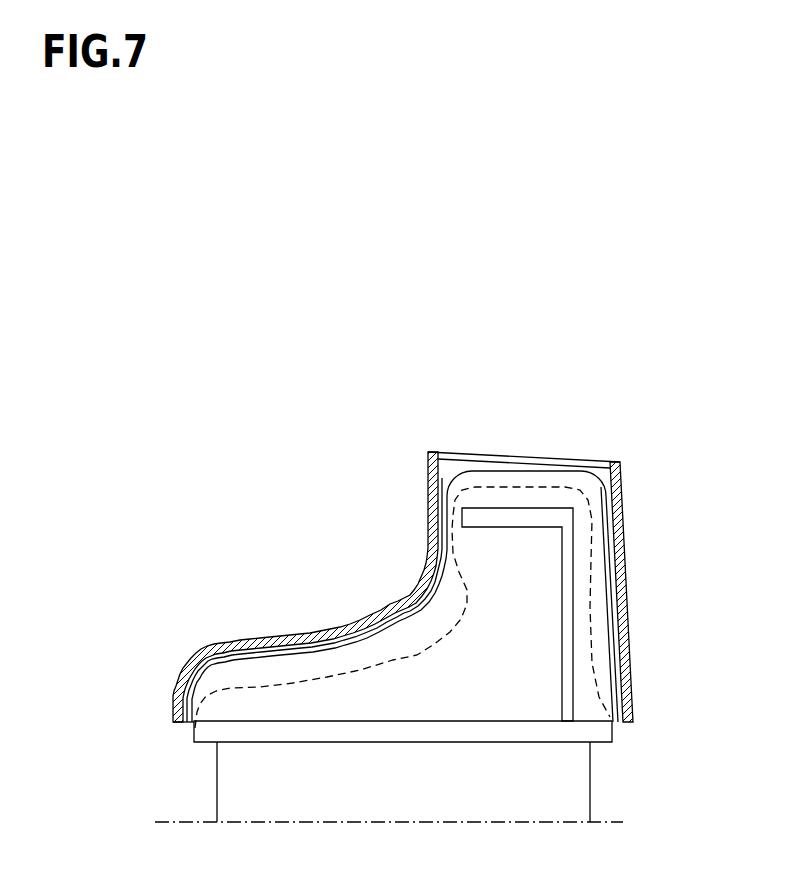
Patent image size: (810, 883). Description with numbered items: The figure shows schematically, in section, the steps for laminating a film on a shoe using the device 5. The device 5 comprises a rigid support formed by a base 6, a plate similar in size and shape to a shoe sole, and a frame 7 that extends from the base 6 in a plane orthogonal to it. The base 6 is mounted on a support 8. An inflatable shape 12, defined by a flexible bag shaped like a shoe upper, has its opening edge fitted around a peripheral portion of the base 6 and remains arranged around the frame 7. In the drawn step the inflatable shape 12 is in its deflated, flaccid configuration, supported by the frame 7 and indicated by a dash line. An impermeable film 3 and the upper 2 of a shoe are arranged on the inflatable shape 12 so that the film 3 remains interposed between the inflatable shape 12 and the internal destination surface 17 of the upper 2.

The device 5 is at (305, 498).
The film 3 is at (430, 505).
The upper 2 is at (432, 572).
The internal destination surface 17 is at (325, 640).
The inflatable shape 12 is at (470, 468).
The frame 7 is at (572, 582).
The base 6 is at (614, 730).
The support 8 is at (590, 807).